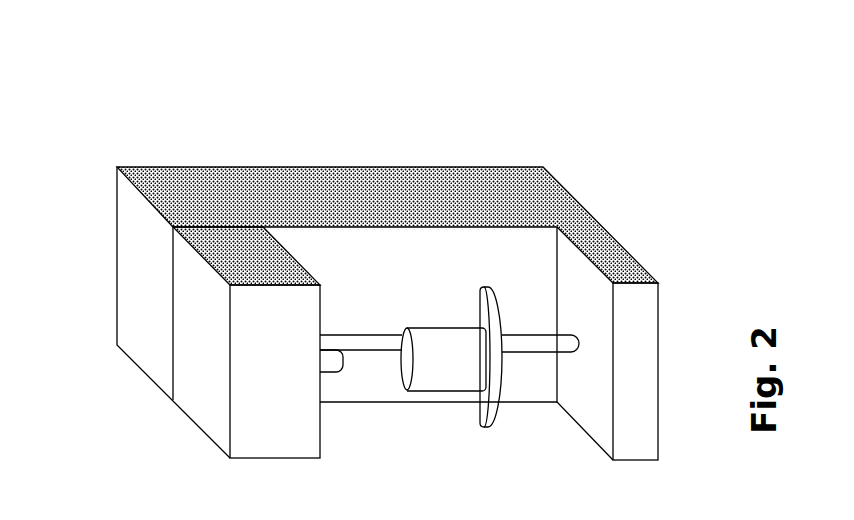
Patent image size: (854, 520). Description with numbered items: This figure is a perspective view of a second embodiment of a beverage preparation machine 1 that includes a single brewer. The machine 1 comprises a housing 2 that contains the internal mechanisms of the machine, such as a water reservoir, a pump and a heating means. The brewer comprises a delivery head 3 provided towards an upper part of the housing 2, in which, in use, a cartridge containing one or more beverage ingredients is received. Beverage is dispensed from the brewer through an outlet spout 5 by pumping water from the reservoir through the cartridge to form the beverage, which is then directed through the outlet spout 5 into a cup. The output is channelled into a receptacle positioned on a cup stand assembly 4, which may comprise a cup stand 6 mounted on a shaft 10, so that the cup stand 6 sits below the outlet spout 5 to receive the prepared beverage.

The beverage preparation machine 1 is at (80, 168).
The housing 2 is at (387, 144).
The delivery head 3 is at (218, 236).
The cup stand assembly 4 is at (596, 225).
The outlet spout 5 is at (328, 190).
The cup stand 6 is at (487, 206).
The shaft 10 is at (449, 179).